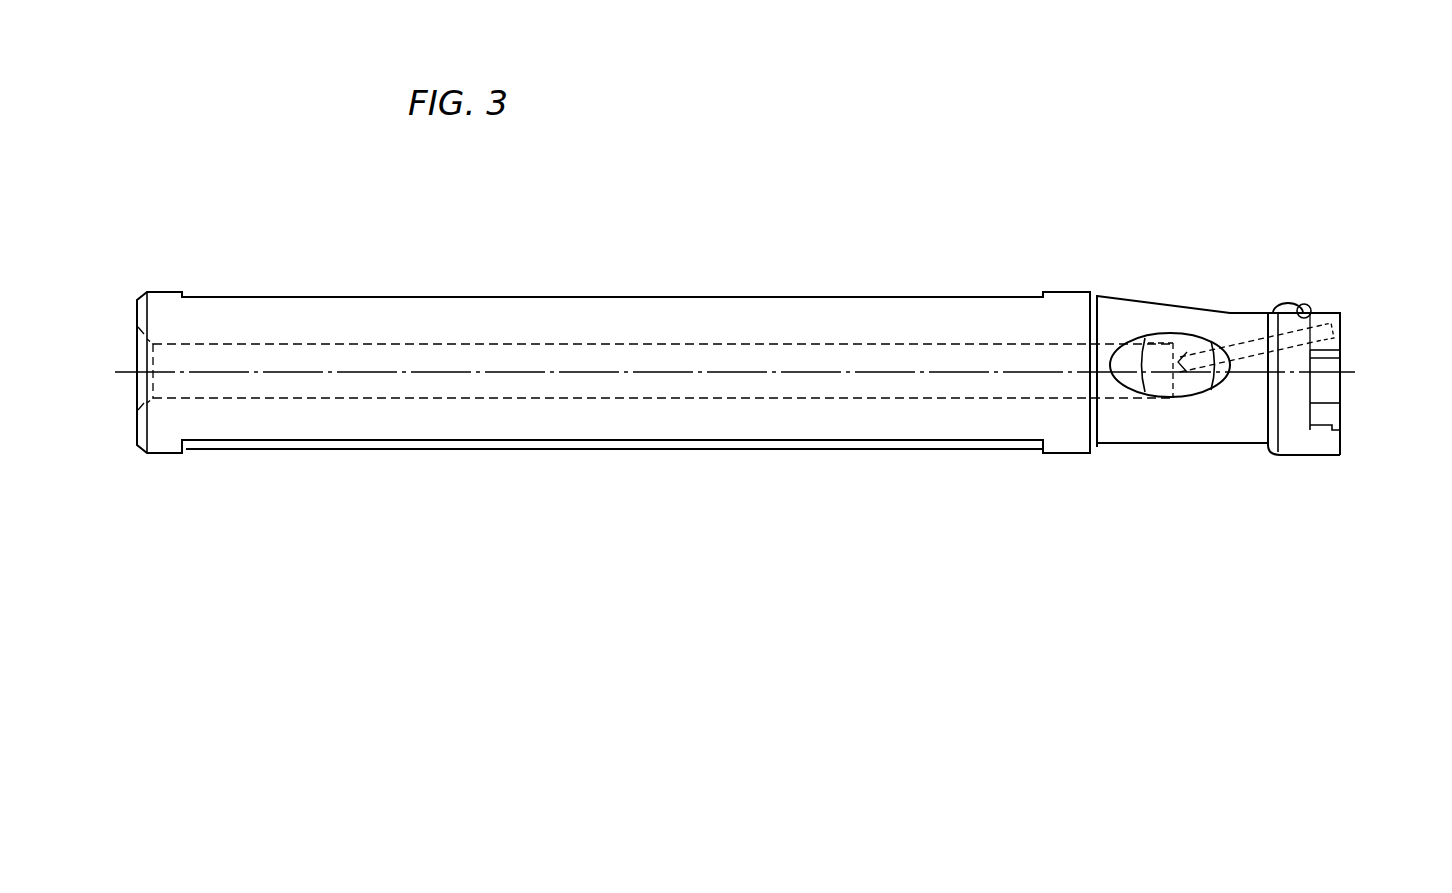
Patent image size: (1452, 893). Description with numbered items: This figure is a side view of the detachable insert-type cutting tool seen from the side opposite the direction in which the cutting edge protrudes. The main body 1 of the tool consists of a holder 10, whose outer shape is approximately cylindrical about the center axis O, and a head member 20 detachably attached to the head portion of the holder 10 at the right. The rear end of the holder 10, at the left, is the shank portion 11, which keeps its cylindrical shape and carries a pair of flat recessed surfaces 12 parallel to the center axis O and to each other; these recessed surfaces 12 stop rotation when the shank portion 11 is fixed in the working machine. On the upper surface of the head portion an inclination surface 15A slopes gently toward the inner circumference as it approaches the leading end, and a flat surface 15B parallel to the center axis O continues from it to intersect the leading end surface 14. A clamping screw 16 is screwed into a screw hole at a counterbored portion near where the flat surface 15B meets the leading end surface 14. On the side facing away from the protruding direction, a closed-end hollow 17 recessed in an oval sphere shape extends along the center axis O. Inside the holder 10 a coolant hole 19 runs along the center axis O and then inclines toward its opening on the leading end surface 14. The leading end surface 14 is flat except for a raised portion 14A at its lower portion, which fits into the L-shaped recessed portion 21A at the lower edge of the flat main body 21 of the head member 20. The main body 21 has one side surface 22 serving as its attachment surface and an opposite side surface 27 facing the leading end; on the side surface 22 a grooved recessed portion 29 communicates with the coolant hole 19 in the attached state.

The main body 1 is at (855, 218).
The holder 10 is at (708, 266).
The shank portion 11 is at (767, 320).
The recessed surfaces 12 is at (633, 295).
The leading end surface 14 is at (1322, 312).
The raised portion 14A is at (1323, 442).
The inclination surface 15A is at (1173, 302).
The flat surface 15B is at (1257, 313).
The clamping screw 16 is at (1287, 303).
The closed-end hollow 17 is at (1195, 385).
The coolant hole 19 is at (982, 360).
The head member 20 is at (1368, 306).
The main body 21 is at (1327, 388).
The L-shaped recessed portion 21A is at (1332, 428).
The side surface 22 is at (1303, 310).
The side surface 27 is at (1345, 335).
The grooved recessed portion 29 is at (1330, 313).
The center axis O is at (520, 372).